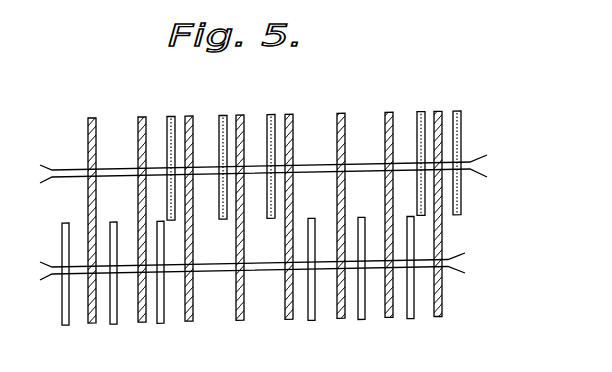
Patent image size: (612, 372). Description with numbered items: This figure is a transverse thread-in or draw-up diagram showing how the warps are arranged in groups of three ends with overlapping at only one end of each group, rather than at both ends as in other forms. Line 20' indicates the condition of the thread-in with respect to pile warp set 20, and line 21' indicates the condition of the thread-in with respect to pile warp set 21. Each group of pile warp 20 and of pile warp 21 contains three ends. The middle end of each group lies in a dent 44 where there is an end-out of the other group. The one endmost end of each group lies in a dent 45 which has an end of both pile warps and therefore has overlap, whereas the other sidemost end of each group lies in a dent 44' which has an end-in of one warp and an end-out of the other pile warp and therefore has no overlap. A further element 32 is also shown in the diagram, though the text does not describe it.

The pile warp set 20 is at (410, 164).
The thread-in condition line 20' is at (284, 167).
The pile warp set 21 is at (370, 278).
The thread-in condition line 21' is at (274, 266).
The disc 32 is at (92, 118).
The dent 44 is at (287, 206).
The dent 44' is at (292, 205).
The dent 45 is at (157, 130).